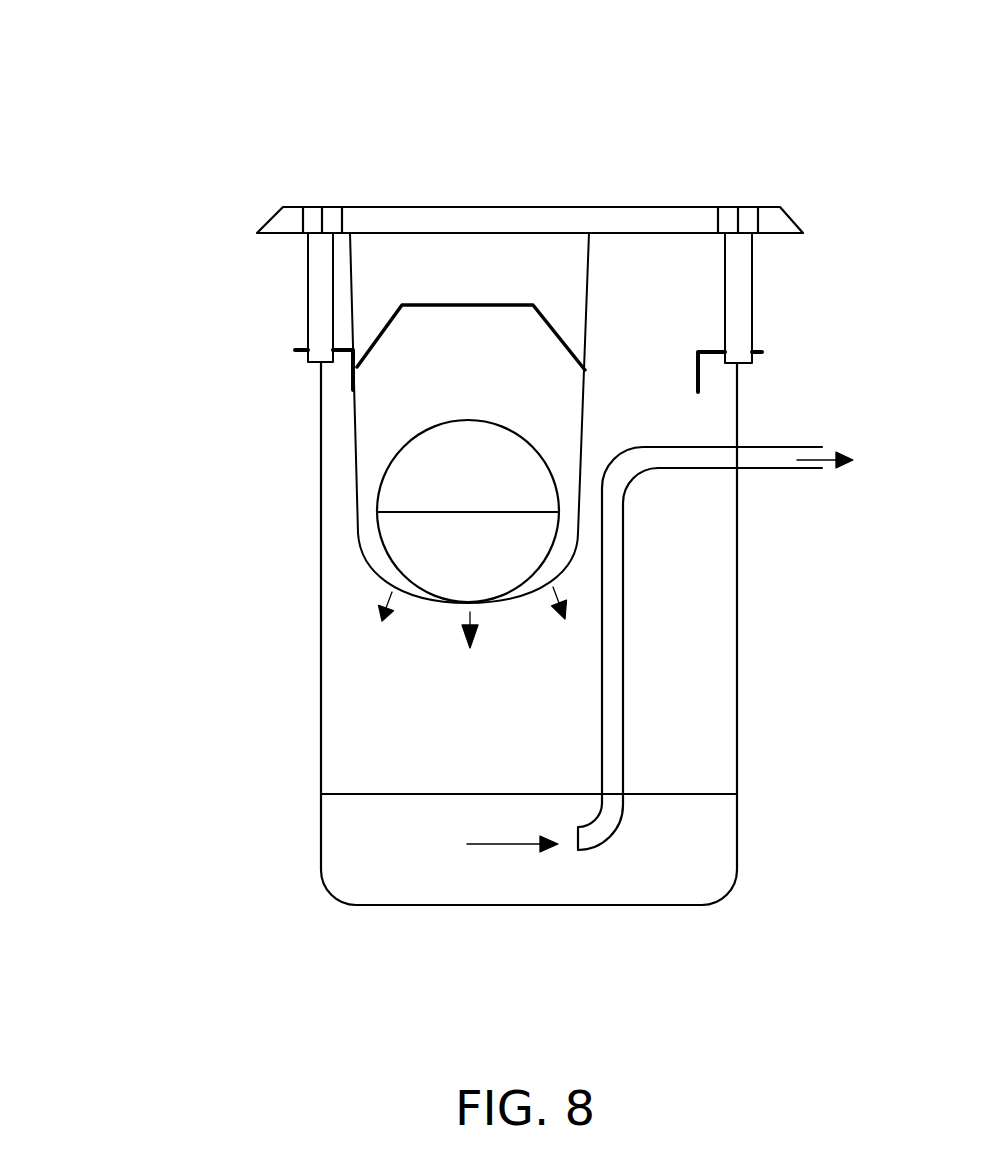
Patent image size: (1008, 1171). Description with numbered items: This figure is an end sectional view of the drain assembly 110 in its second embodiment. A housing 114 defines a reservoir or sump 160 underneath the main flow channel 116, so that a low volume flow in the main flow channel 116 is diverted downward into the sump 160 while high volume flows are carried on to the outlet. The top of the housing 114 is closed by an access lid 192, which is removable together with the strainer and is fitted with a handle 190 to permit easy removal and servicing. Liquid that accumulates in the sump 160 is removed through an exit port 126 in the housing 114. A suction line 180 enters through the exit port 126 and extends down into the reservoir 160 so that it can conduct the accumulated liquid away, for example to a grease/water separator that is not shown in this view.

The drain assembly 110 is at (240, 788).
The housing 114 is at (380, 905).
The main flow channel 116 is at (387, 475).
The exit port 126 is at (743, 445).
The sump 160 is at (662, 885).
The suction line 180 is at (782, 468).
The handle 190 is at (498, 303).
The access lid 192 is at (480, 205).